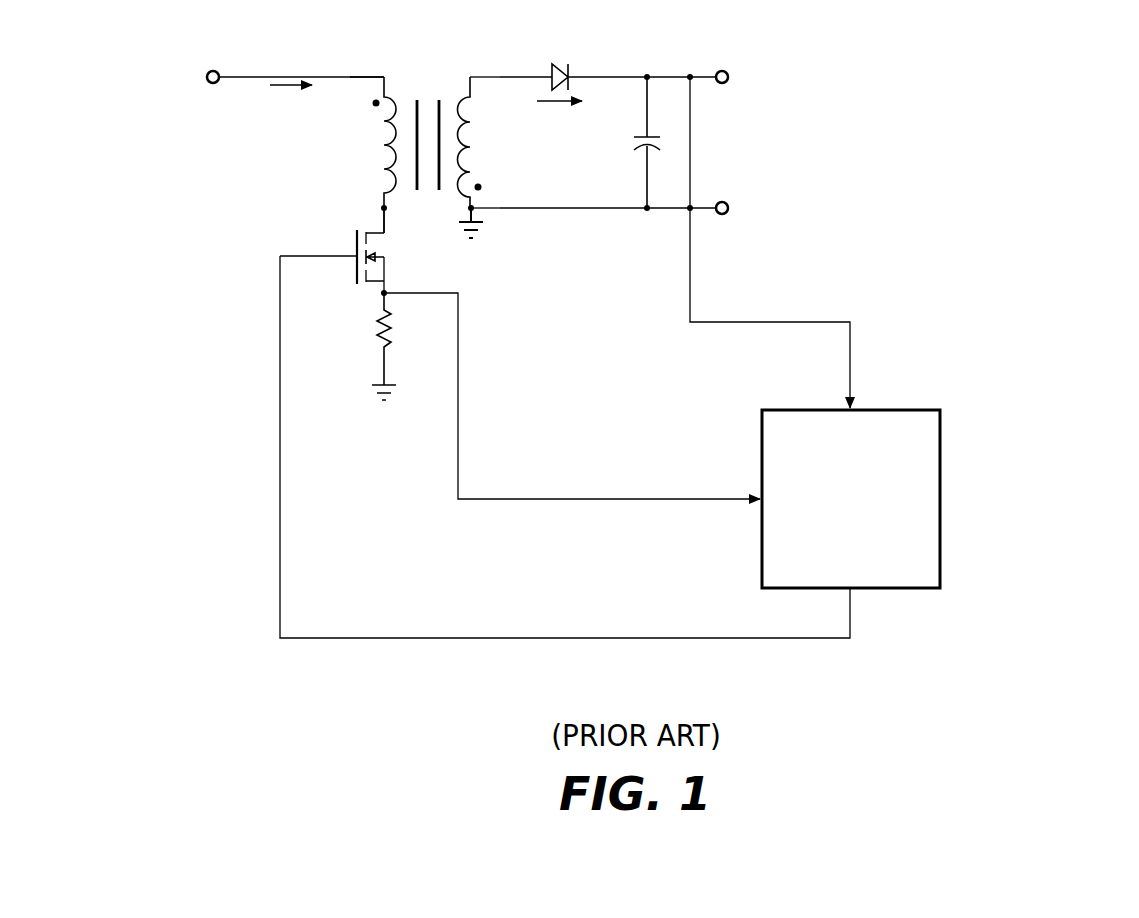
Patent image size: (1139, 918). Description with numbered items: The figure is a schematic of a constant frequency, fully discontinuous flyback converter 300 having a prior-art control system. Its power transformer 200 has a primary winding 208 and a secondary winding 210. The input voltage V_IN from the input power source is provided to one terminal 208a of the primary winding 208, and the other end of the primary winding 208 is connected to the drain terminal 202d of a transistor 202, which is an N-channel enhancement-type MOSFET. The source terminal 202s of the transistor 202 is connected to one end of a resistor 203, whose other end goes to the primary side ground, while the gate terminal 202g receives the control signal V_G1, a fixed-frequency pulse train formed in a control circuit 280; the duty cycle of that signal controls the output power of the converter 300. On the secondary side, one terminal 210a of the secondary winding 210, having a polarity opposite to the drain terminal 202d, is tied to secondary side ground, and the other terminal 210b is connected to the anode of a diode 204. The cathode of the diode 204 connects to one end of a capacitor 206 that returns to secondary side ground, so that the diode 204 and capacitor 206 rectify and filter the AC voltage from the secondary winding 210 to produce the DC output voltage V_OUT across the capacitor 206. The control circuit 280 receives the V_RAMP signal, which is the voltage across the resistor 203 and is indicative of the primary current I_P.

The flyback converter 300 is at (639, 327).
The power transformer 200 is at (428, 93).
The primary winding 208 is at (384, 156).
The terminal of the primary winding 208a is at (383, 74).
The secondary winding 210 is at (467, 147).
The terminal of the secondary winding 210a is at (471, 76).
The terminal of the secondary winding 210b is at (474, 208).
The transistor 202 is at (306, 280).
The drain terminal 202d is at (374, 232).
The gate terminal 202g is at (306, 254).
The source terminal 202s is at (380, 286).
The resistor 203 is at (392, 322).
The diode 204 is at (558, 72).
The capacitor 206 is at (633, 140).
The control circuit 280 is at (904, 410).